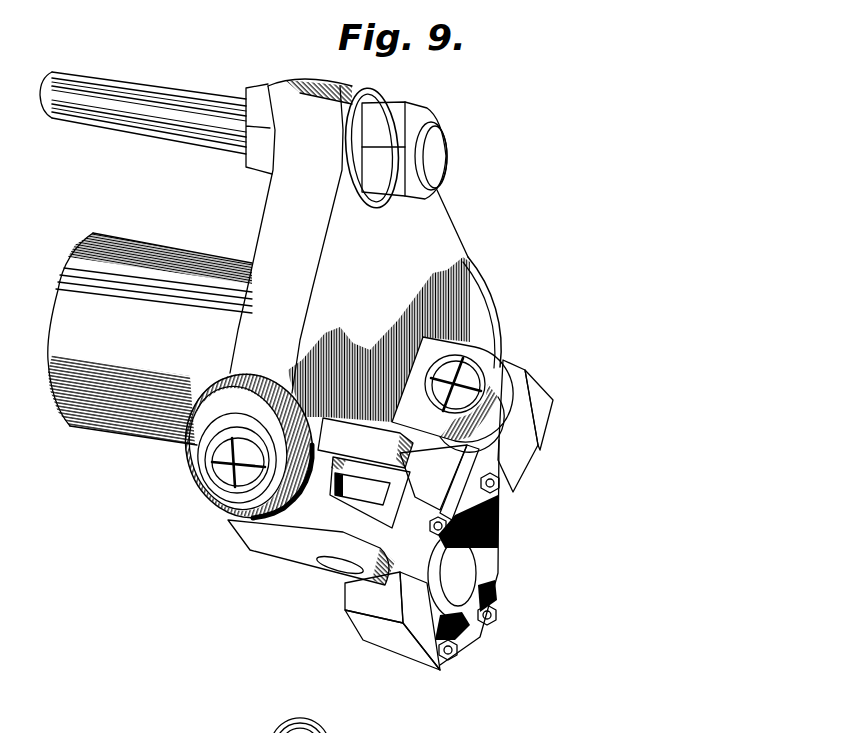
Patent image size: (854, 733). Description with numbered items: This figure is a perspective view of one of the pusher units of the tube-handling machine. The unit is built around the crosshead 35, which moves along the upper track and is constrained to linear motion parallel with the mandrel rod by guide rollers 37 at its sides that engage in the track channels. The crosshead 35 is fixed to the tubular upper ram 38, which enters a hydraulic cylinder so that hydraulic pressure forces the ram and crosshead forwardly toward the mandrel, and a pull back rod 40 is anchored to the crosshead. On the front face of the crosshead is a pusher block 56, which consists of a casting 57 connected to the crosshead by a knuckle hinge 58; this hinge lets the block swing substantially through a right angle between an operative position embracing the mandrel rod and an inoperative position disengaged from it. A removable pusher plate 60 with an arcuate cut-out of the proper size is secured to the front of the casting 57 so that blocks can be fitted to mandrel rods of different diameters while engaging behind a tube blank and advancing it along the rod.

The crosshead 35 is at (453, 223).
The guide rollers 37 is at (202, 488).
The tubular upper ram 38 is at (159, 235).
The pull back rod 40 is at (116, 78).
The pusher block 56 is at (505, 532).
The casting 57 is at (377, 633).
The knuckle hinge 58 is at (470, 373).
The pusher plate 60 is at (495, 568).